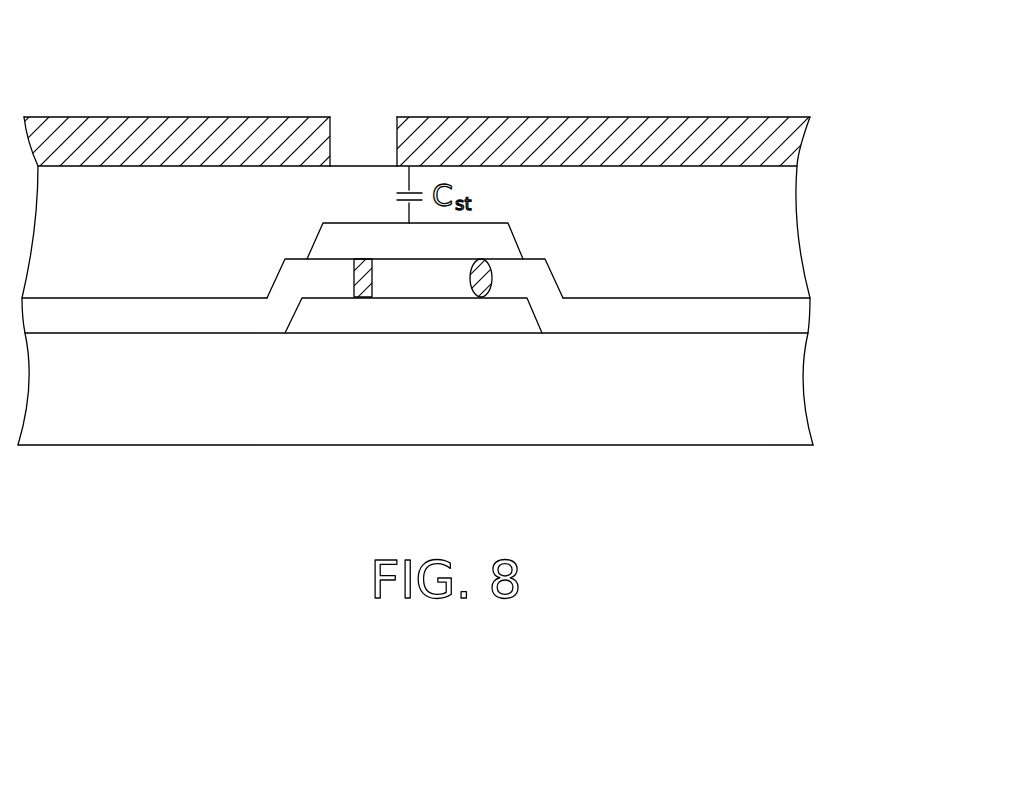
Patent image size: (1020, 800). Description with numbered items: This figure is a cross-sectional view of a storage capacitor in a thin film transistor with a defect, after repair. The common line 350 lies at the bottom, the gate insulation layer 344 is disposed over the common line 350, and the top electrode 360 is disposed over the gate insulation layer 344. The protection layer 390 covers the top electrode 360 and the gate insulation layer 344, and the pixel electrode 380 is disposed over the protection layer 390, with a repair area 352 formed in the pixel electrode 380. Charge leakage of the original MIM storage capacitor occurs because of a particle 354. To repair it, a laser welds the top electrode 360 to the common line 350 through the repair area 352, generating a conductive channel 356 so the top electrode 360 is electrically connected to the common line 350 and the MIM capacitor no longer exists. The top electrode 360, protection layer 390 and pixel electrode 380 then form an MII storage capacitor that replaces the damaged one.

The gate insulation layer 344 is at (802, 322).
The common line 350 is at (445, 313).
The repair area 352 is at (363, 126).
The particle 354 is at (487, 266).
The conductive channel 356 is at (353, 278).
The top electrode 360 is at (457, 230).
The pixel electrode 380 is at (787, 145).
The protection layer 390 is at (785, 235).